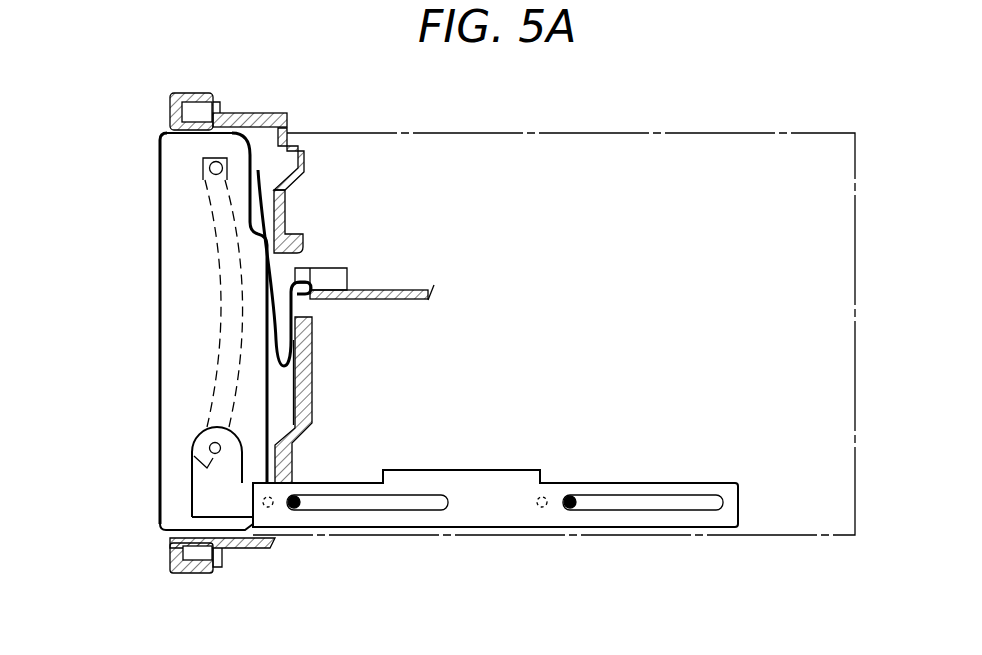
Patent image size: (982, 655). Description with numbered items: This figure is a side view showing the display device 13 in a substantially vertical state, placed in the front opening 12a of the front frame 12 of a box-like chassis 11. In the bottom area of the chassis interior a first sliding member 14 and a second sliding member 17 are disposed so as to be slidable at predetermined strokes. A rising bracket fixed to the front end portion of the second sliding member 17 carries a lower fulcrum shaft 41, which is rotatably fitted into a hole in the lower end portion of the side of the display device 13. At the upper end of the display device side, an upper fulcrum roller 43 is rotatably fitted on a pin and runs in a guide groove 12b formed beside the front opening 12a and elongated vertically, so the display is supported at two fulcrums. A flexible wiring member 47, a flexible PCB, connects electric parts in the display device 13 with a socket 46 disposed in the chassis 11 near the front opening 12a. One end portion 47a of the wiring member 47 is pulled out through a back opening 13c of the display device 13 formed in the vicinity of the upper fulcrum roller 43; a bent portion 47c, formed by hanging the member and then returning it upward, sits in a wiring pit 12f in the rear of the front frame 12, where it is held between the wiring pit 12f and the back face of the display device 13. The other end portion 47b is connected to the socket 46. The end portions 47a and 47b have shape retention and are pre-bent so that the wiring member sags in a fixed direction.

The chassis 11 is at (707, 131).
The front frame 12 is at (172, 100).
The front opening 12a is at (187, 134).
The guide groove 12b is at (222, 300).
The wiring pit 12f is at (303, 357).
The display device 13 is at (160, 370).
The back opening 13c is at (260, 168).
The first sliding member 14 is at (650, 483).
The second sliding member 17 is at (232, 497).
The lower fulcrum shaft 41 is at (210, 448).
The upper fulcrum roller 43 is at (210, 170).
The socket 46 is at (347, 268).
The flexible wiring member 47 is at (277, 342).
The one end portion of the wiring member 47a is at (298, 178).
The other end portion of the wiring member 47b is at (303, 295).
The bent portion 47c is at (307, 380).